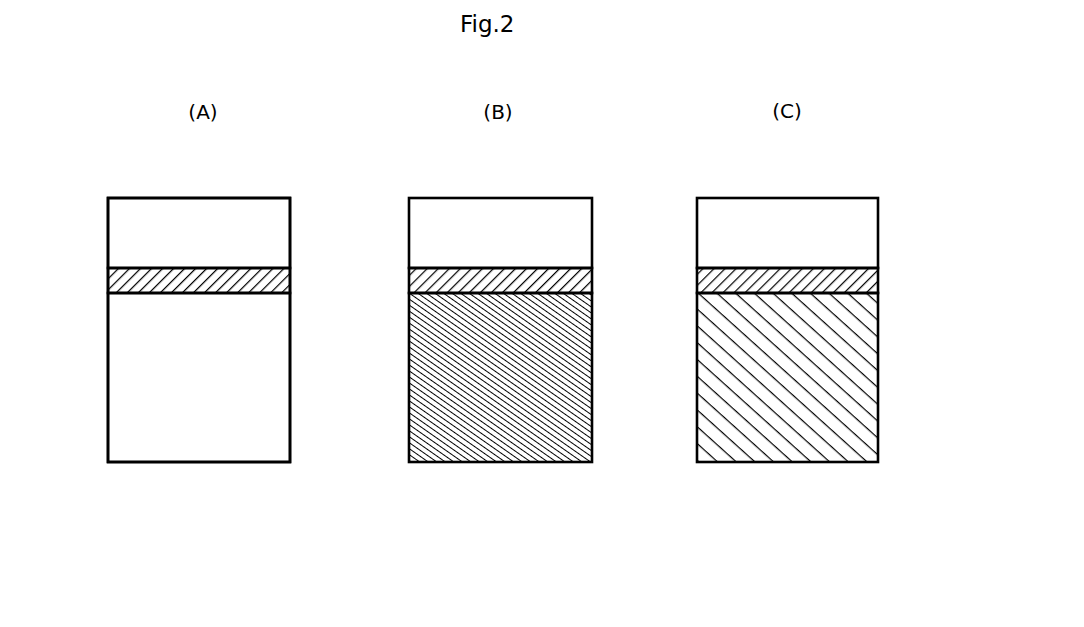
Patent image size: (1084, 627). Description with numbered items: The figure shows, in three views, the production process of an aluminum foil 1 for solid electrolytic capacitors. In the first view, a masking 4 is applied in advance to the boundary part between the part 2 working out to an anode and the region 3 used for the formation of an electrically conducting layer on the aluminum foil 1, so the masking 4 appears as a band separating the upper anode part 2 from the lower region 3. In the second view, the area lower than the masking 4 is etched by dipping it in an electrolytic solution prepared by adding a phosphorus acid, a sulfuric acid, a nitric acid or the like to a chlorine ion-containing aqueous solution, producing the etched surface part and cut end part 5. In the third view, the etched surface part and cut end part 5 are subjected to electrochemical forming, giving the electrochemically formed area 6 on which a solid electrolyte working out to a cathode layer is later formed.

The aluminum foil 1 is at (277, 182).
The part working out to an anode 2 is at (122, 232).
The region used for the formation of an electrically conducting layer 3 is at (203, 398).
The masking 4 is at (108, 282).
The cut end part 5 is at (498, 392).
The electrochemically formed area 6 is at (850, 380).